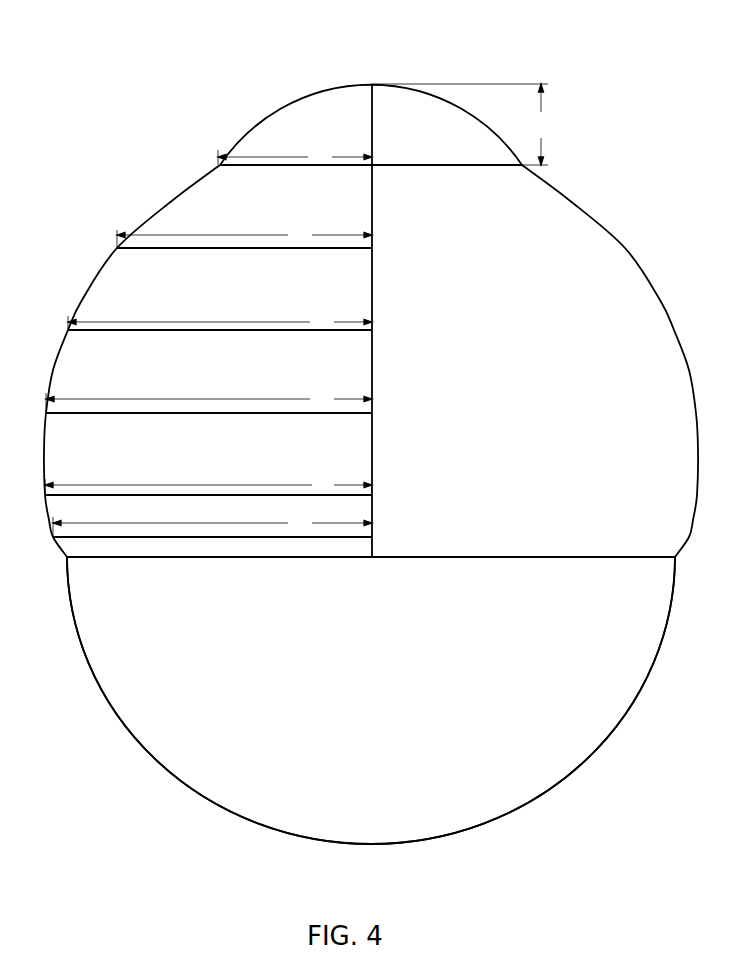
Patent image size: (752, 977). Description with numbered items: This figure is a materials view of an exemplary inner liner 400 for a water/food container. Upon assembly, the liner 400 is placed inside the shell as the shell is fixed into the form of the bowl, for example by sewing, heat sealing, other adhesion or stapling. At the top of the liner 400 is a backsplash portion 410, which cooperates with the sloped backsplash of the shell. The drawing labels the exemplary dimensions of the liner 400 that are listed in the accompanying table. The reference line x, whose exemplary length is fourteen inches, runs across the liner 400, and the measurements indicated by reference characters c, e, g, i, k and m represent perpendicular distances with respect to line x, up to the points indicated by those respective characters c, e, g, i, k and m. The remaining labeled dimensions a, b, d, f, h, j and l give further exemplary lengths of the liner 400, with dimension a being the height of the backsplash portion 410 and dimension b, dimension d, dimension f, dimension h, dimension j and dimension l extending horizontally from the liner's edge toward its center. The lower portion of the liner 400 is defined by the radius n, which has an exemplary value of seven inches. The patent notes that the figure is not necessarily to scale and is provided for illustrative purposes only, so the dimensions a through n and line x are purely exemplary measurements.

The inner liner 400 is at (160, 150).
The backsplash portion 410 is at (428, 114).
The dimension a is at (460, 124).
The dimension b is at (295, 156).
The dimension c is at (393, 167).
The dimension d is at (244, 235).
The dimension e is at (372, 248).
The dimension f is at (220, 322).
The dimension g is at (372, 330).
The dimension h is at (209, 399).
The dimension i is at (372, 413).
The dimension j is at (208, 484).
The dimension k is at (372, 495).
The dimension l is at (212, 523).
The dimension m is at (372, 537).
The dimension n (radius) n is at (143, 743).
The line x is at (279, 571).